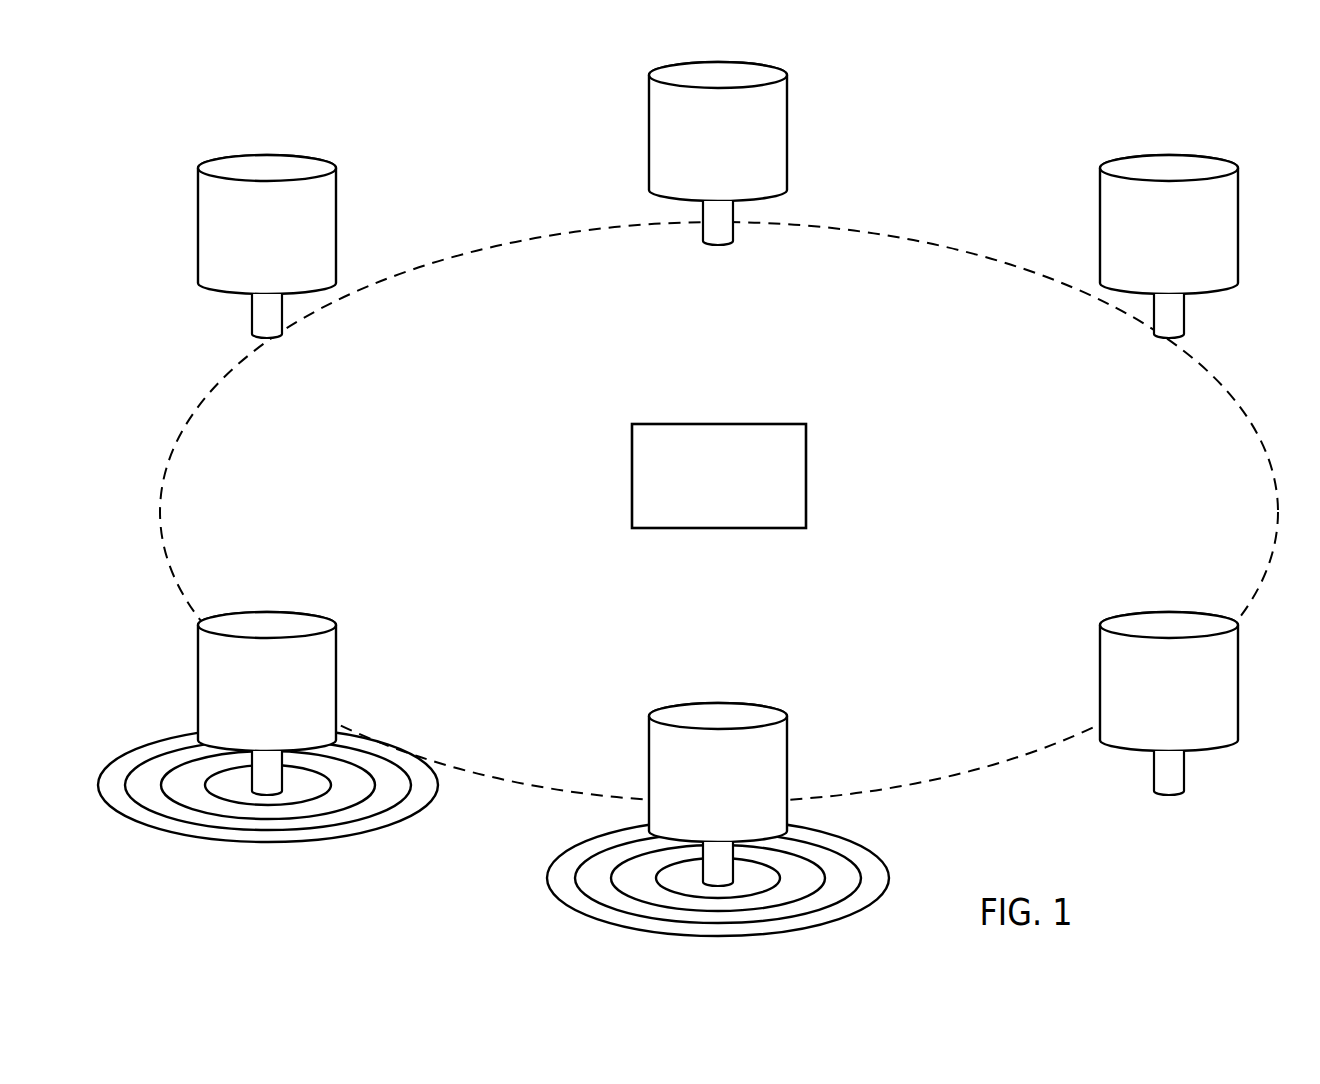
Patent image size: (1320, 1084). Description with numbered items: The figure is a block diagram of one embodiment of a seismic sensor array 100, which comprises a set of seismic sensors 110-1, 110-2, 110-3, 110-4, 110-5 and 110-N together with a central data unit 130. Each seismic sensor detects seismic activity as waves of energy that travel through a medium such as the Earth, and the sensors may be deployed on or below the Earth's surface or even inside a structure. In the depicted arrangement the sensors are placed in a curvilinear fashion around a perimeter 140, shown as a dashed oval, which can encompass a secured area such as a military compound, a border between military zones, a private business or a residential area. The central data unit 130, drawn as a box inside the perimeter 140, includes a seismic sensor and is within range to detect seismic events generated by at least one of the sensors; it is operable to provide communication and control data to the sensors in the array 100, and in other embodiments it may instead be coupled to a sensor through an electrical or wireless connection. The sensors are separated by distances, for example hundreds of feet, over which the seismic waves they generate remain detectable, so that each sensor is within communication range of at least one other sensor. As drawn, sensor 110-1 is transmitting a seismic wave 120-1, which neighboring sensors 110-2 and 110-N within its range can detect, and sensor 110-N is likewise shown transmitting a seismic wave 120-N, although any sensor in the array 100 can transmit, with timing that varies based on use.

The seismic sensor array 100 is at (975, 152).
The seismic sensor 110-1 is at (297, 697).
The seismic sensor 110-2 is at (297, 241).
The seismic sensor 110-3 is at (748, 148).
The seismic sensor 110-4 is at (1199, 241).
The seismic sensor 110-5 is at (1199, 697).
The seismic sensor 110-N is at (688, 788).
The seismic wave 120-1 is at (267, 842).
The seismic wave 120-N is at (548, 872).
The central data unit 130 is at (806, 476).
The perimeter 140 is at (992, 262).